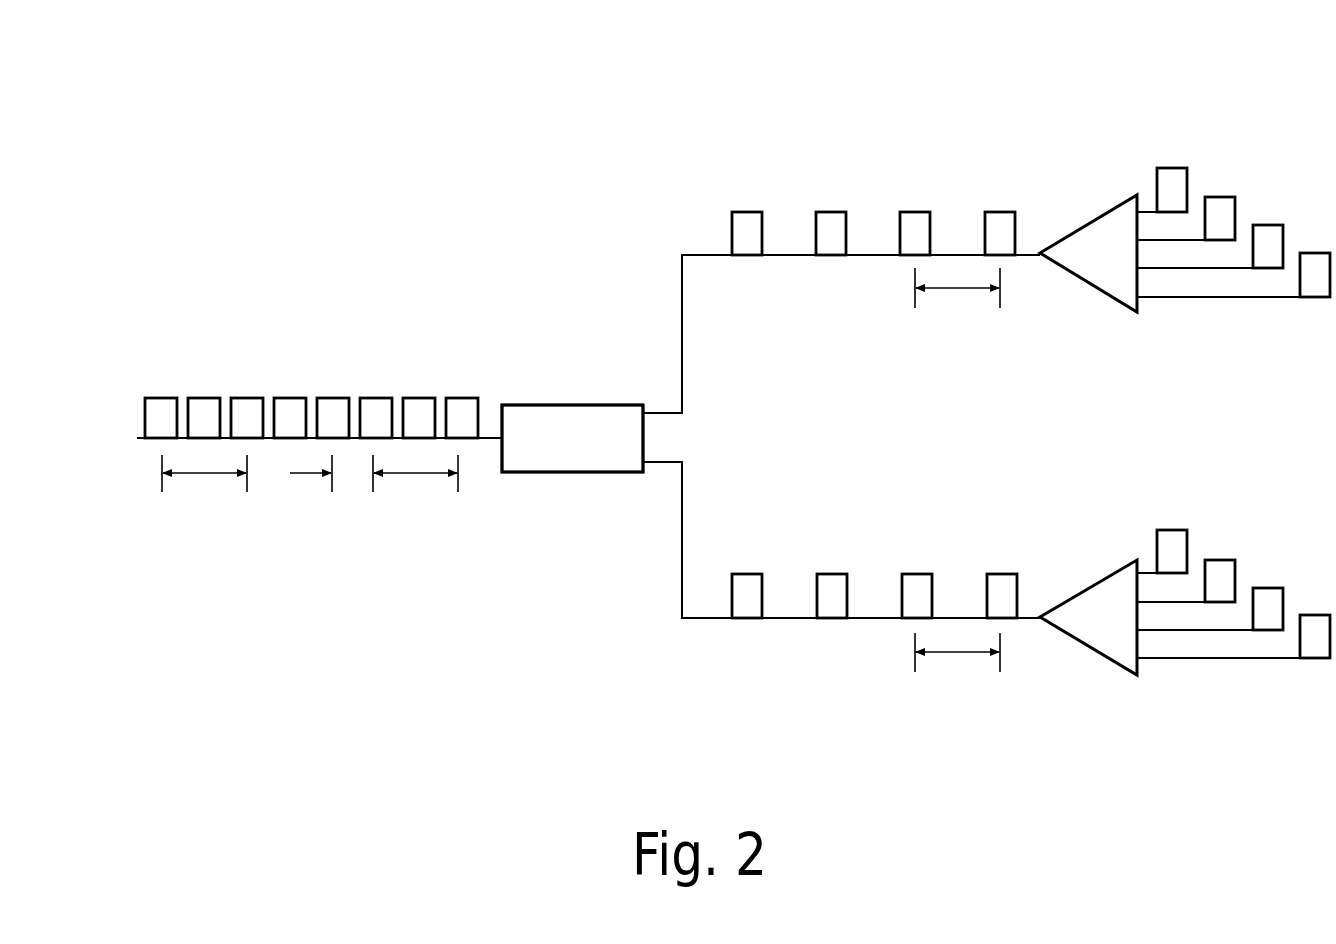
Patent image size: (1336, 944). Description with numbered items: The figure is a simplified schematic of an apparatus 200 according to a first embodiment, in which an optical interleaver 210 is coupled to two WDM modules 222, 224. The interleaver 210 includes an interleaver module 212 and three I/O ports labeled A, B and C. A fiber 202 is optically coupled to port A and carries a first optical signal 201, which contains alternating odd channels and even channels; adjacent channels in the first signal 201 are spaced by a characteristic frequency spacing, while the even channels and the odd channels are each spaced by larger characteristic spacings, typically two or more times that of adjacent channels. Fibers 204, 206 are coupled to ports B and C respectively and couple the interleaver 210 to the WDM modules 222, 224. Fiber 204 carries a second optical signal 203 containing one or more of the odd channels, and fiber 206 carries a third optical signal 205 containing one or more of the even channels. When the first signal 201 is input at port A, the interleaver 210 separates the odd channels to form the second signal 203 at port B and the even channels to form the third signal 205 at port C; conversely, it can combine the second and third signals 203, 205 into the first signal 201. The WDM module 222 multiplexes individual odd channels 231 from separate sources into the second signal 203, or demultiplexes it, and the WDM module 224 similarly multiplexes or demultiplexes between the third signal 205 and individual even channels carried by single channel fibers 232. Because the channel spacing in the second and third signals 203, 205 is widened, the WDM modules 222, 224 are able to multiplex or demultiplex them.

The apparatus 200 is at (270, 112).
The first optical signal 201 is at (480, 375).
The fiber 202 is at (487, 440).
The second optical signal 203 is at (1018, 195).
The fiber 204 is at (682, 335).
The third optical signal 205 is at (1022, 563).
The fiber 206 is at (682, 550).
The optical interleaver 210 is at (553, 386).
The interleaver module 212 is at (592, 455).
The WDM module 222 is at (1088, 253).
The WDM module 224 is at (1088, 617).
The individual odd channels 231 is at (1216, 148).
The single channel fibers 232 is at (1242, 694).